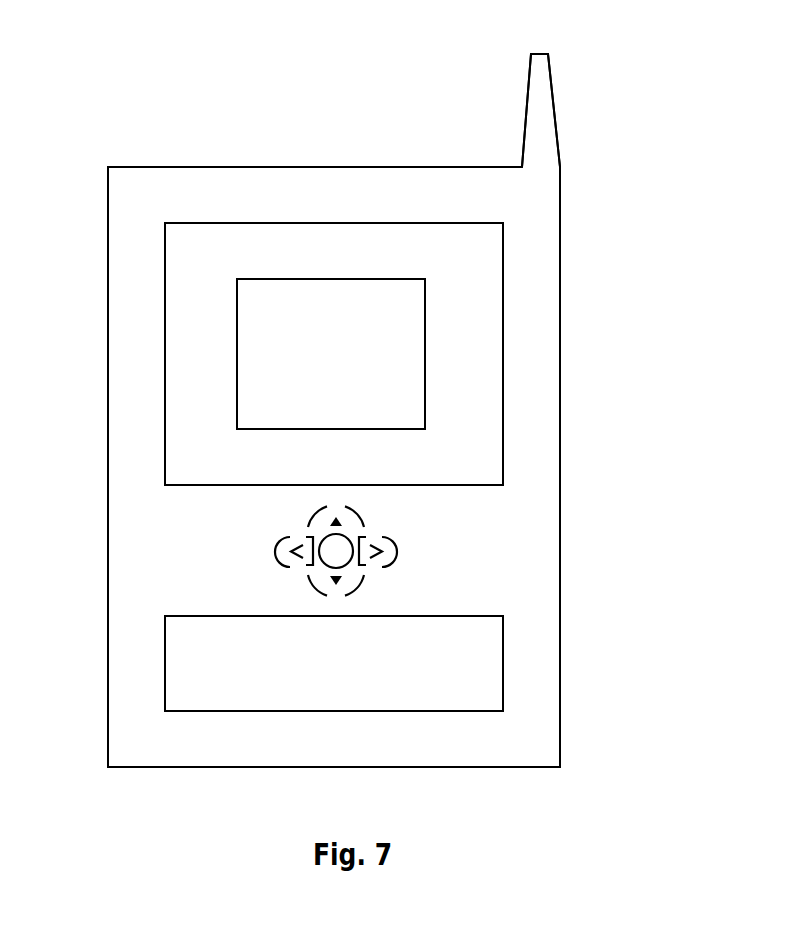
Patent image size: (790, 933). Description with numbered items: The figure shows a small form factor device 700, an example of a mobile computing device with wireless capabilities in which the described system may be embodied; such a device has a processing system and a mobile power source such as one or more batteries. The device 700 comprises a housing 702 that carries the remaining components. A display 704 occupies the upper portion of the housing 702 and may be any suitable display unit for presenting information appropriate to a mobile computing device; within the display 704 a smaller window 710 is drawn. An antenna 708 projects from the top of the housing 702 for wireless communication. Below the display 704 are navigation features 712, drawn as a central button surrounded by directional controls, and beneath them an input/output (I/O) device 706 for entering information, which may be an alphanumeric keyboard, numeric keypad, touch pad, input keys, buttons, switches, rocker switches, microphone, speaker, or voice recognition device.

The small form factor device 700 is at (122, 64).
The housing 702 is at (560, 467).
The display 704 is at (503, 242).
The input/output (I/O) device 706 is at (503, 653).
The antenna 708 is at (527, 102).
The display window 710 is at (425, 377).
The navigation features 712 is at (410, 545).